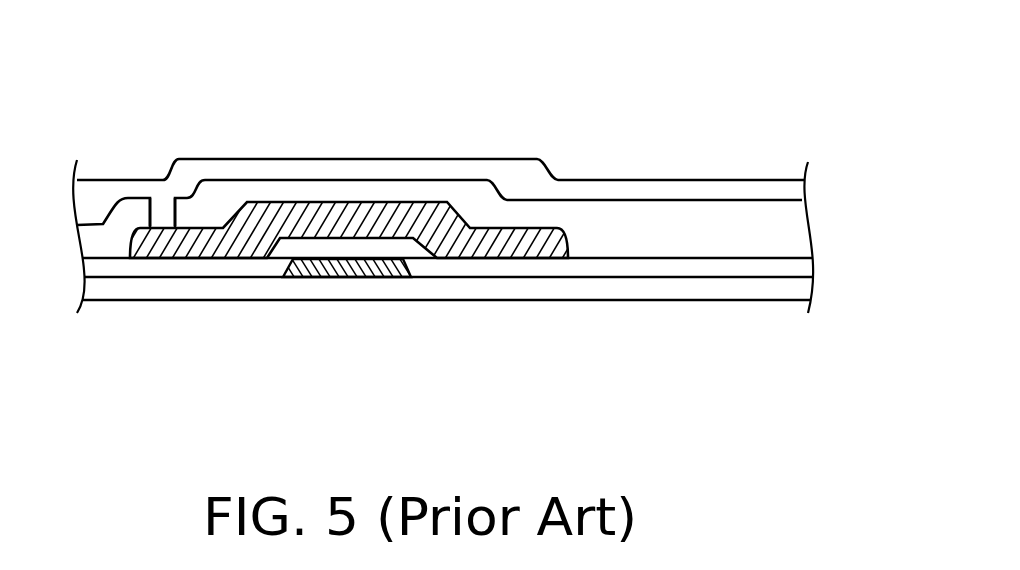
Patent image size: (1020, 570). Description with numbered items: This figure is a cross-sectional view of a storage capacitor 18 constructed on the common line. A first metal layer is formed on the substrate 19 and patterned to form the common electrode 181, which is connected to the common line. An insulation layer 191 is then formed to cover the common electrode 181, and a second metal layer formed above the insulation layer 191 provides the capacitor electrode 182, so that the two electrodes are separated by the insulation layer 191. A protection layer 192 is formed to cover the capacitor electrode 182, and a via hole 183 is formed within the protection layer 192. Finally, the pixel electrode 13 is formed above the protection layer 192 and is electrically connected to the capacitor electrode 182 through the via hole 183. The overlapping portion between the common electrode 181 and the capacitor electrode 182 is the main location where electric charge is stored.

The storage capacitor 18 is at (305, 116).
The pixel electrode 13 is at (638, 188).
The protection layer 192 is at (126, 225).
The via hole 183 is at (161, 199).
The capacitor electrode 182 is at (495, 259).
The common electrode 181 is at (342, 279).
The insulation layer 191 is at (686, 268).
The substrate 19 is at (758, 289).